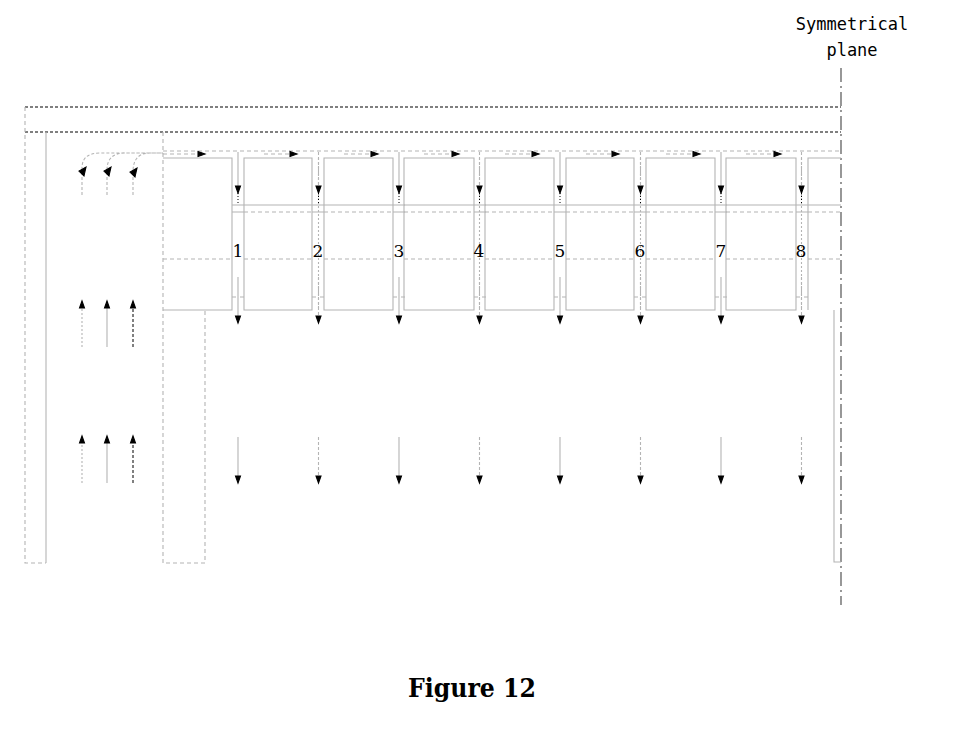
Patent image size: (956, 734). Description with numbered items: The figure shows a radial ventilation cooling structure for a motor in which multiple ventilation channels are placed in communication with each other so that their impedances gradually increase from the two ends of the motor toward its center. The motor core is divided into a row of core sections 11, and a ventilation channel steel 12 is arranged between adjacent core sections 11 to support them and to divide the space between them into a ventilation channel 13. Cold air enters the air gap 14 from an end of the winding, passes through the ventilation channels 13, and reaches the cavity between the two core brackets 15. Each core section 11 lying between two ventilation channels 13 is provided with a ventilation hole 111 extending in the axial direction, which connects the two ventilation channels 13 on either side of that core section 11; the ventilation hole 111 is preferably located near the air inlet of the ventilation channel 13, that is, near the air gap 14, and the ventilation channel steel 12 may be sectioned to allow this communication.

The core section 11 is at (458, 175).
The ventilation hole 111 is at (260, 207).
The ventilation channel steel 12 is at (560, 225).
The ventilation channel 13 is at (645, 175).
The air gap 14 is at (334, 153).
The core bracket 15 is at (183, 553).